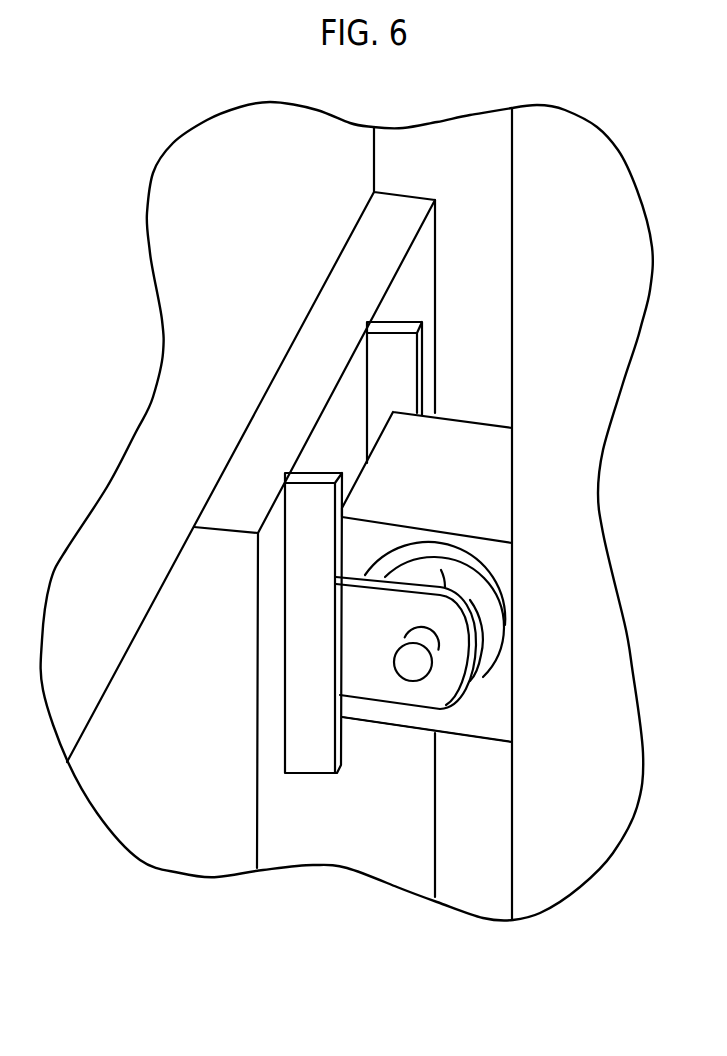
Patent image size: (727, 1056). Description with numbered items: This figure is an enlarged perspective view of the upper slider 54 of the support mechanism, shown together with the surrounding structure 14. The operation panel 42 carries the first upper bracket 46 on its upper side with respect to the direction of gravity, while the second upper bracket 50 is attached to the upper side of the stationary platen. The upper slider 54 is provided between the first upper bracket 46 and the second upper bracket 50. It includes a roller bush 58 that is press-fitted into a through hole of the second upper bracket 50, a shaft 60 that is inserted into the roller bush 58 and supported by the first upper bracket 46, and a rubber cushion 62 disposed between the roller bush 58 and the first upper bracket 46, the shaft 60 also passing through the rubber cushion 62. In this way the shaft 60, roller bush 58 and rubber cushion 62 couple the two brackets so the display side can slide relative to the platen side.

The inclined plate 14 is at (165, 445).
The operation panel 42 is at (156, 833).
The first upper bracket 46 is at (305, 650).
The second upper bracket 50 is at (480, 475).
The upper slider 54 is at (382, 745).
The roller bush 58 is at (497, 575).
The shaft 60 is at (414, 637).
The rubber cushion 62 is at (490, 622).